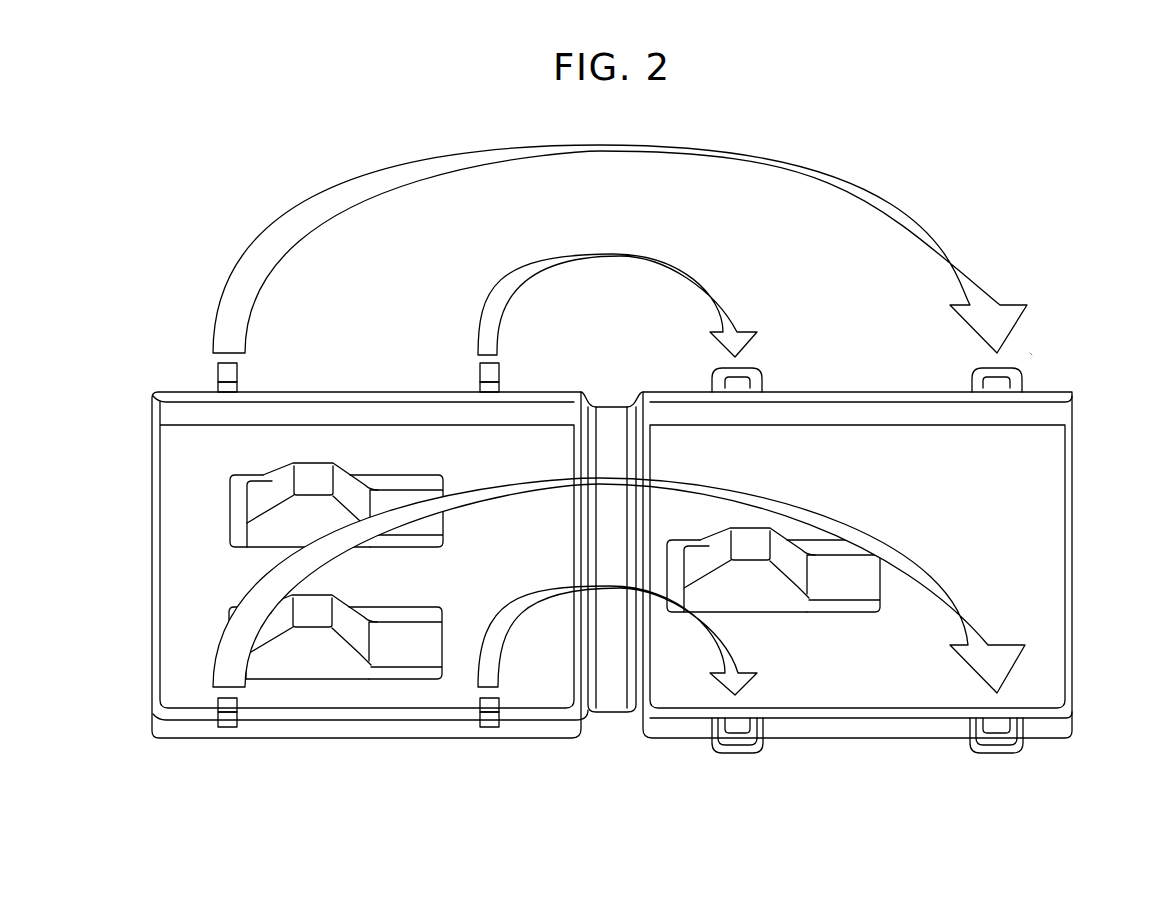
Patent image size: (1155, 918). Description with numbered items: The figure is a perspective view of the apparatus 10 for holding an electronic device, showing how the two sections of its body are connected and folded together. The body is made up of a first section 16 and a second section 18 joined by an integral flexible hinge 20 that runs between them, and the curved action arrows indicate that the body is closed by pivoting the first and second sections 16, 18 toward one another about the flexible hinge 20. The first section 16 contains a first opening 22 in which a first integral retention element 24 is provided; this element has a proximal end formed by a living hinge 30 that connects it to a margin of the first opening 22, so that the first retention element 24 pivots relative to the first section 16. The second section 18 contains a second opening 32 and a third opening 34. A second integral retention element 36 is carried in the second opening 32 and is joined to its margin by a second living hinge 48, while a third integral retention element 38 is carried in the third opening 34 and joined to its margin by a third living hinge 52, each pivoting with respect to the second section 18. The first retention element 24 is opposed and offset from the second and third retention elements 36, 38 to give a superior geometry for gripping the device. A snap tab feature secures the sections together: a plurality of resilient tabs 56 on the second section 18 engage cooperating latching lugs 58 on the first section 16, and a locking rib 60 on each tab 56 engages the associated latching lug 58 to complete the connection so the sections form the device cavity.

The apparatus 10 is at (1003, 212).
The first section 16 is at (1030, 545).
The second section 18 is at (180, 452).
The flexible hinge 20 is at (612, 688).
The first opening 22 is at (682, 572).
The first integral retention element 24 is at (794, 584).
The living hinge 30 is at (880, 583).
The second opening 32 is at (235, 510).
The third opening 34 is at (412, 612).
The second integral retention element 36 is at (326, 531).
The third integral retention element 38 is at (379, 669).
The second living hinge 48 is at (445, 515).
The third living hinge 52 is at (445, 637).
The resilient tabs 56 is at (216, 388).
The latching lugs 58 is at (755, 372).
The locking rib 60 is at (228, 372).